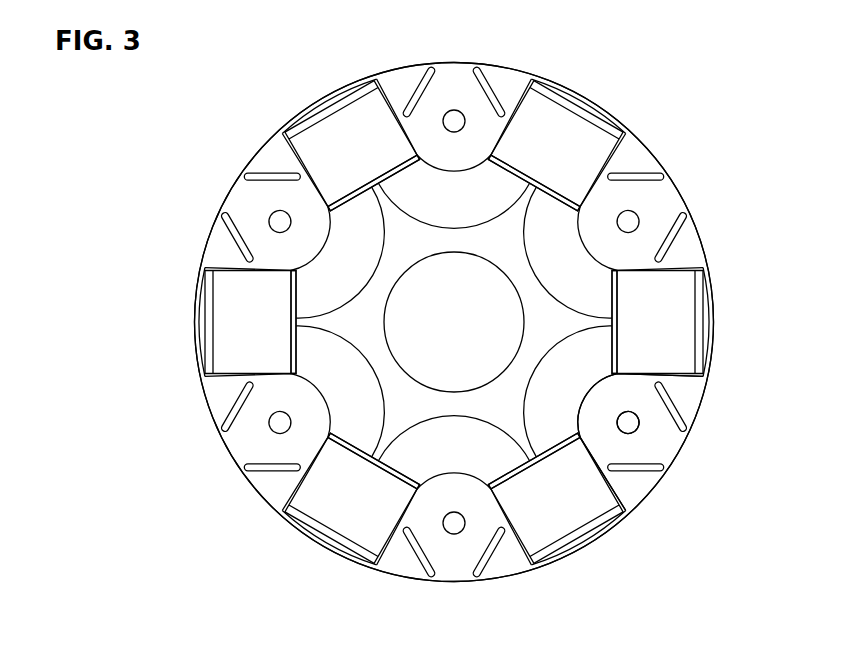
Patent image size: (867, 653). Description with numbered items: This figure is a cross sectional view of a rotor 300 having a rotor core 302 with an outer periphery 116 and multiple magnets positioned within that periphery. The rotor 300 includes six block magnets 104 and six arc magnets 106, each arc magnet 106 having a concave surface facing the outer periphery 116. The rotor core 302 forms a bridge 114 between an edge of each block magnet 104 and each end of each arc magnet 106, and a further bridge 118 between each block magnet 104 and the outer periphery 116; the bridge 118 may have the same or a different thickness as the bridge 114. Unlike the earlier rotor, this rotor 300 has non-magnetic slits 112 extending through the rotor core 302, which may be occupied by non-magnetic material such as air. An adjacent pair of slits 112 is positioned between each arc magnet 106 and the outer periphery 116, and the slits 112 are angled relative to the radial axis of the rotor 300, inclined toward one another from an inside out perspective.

The rotor 300 is at (666, 68).
The block magnet 104 is at (228, 302).
The arc magnet 106 is at (570, 426).
The non-magnetic slit 112 is at (637, 166).
The bridge 114 is at (620, 267).
The outer periphery 116 is at (703, 240).
The bridge 118 is at (713, 325).
The rotor core 302 is at (662, 447).